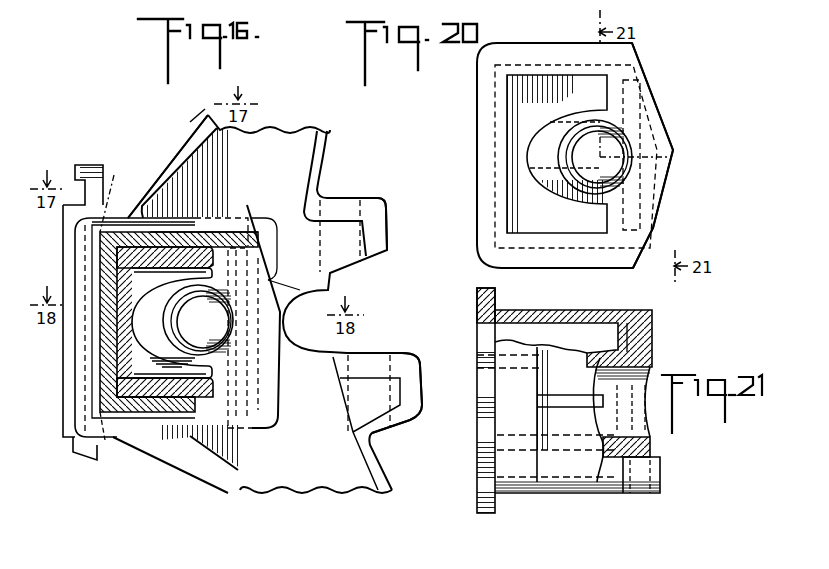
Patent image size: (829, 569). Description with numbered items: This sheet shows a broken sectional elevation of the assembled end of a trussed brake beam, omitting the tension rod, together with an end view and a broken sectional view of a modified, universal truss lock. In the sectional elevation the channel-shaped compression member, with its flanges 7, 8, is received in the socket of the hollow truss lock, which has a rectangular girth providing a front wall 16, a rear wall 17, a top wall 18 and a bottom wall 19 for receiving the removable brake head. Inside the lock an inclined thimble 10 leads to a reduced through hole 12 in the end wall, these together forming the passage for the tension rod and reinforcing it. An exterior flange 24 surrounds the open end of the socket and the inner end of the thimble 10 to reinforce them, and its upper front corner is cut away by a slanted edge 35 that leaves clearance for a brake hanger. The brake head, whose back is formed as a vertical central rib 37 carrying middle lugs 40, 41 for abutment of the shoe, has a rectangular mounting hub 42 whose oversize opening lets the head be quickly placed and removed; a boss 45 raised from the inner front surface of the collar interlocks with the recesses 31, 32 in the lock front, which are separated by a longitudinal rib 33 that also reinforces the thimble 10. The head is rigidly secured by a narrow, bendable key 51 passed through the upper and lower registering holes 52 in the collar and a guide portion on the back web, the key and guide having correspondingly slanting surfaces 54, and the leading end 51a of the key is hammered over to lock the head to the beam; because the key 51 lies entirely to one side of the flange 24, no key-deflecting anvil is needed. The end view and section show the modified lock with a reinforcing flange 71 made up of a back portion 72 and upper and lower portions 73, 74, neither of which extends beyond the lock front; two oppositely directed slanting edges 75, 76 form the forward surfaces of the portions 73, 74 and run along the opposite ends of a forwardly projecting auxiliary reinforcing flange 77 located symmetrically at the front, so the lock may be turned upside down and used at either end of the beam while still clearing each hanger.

In FIG. 16, the flange 7 is at (160, 232).
In FIG. 16, the flange 8 is at (185, 382).
In FIG. 16, the thimble 10 is at (157, 294).
In FIG. 21, the thimble 10 is at (598, 315).
In FIG. 16, the through hole 12 is at (185, 320).
In FIG. 16, the front wall 16 is at (240, 373).
In FIG. 16, the rear wall 17 is at (108, 265).
In FIG. 16, the top wall 18 is at (180, 232).
In FIG. 16, the bottom wall 19 is at (155, 400).
In FIG. 16, the exterior flange 24 is at (240, 218).
In FIG. 16, the slanted edge 35 is at (280, 281).
In FIG. 16, the vertical central rib 37 is at (292, 142).
In FIG. 16, the middle lug 40 is at (385, 208).
In FIG. 16, the middle lug 41 is at (418, 387).
In FIG. 16, the mounting hub 42 is at (133, 215).
In FIG. 16, the boss 45 is at (277, 243).
In FIG. 16, the key 51 is at (88, 165).
In FIG. 16, the leading end of key 51a is at (75, 452).
In FIG. 16, the registering hole 52 is at (114, 185).
In FIG. 16, the slanting surfaces 54 is at (92, 240).
In FIG. 21, the reinforcing flange 71 is at (464, 294).
In FIG. 20, the back portion 72 is at (488, 150).
In FIG. 20, the upper flange portion 73 is at (573, 53).
In FIG. 21, the upper flange portion 73 is at (495, 300).
In FIG. 20, the lower flange portion 74 is at (560, 258).
In FIG. 21, the lower flange portion 74 is at (478, 500).
In FIG. 20, the slanting edge 75 is at (655, 113).
In FIG. 21, the slanting edge 75 is at (485, 368).
In FIG. 20, the slanting edge 76 is at (650, 200).
In FIG. 21, the slanting edge 76 is at (480, 463).
In FIG. 21, the auxiliary reinforcing flange 77 is at (485, 402).
In FIG. 21, the recess 31 is at (566, 368).
In FIG. 21, the recess 32 is at (565, 467).
In FIG. 21, the longitudinal rib 33 is at (572, 397).